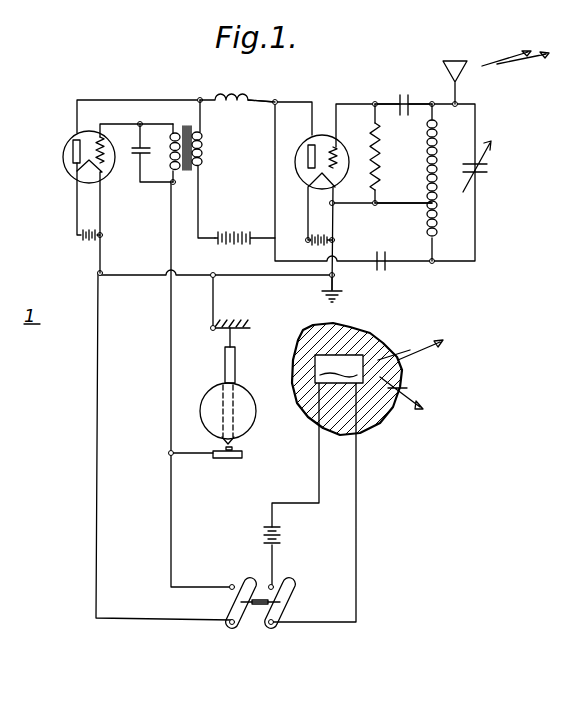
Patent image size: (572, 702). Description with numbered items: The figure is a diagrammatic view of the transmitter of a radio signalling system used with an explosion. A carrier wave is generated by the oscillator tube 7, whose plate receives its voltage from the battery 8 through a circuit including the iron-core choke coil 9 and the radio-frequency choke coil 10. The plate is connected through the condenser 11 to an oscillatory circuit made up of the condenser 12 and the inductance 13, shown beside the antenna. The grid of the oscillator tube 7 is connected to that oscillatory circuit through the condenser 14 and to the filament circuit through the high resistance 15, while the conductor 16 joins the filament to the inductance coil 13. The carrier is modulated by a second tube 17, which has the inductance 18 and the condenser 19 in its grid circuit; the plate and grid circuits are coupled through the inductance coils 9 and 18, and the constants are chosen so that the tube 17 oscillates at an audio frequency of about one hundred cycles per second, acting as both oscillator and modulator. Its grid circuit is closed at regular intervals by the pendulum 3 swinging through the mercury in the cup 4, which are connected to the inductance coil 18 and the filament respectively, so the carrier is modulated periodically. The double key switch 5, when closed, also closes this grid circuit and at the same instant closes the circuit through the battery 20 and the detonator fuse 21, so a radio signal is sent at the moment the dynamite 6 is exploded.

The pendulum 3 is at (230, 443).
The cup of mercury 4 is at (242, 450).
The double key switch 5 is at (291, 594).
The dynamite 6 is at (339, 383).
The oscillator tube 7 is at (305, 147).
The battery 8 is at (229, 235).
The iron-core choke coil 9 is at (205, 143).
The radio-frequency choke coil 10 is at (240, 96).
The condenser 11 is at (387, 267).
The condenser 12 is at (482, 174).
The inductance 13 is at (437, 197).
The condenser 14 is at (402, 118).
The high resistance 15 is at (381, 167).
The conductor 16 is at (392, 207).
The tube 17 is at (92, 126).
The inductance 18 is at (170, 150).
The condenser 19 is at (136, 160).
The battery 20 is at (281, 534).
The detonator fuse 21 is at (338, 387).